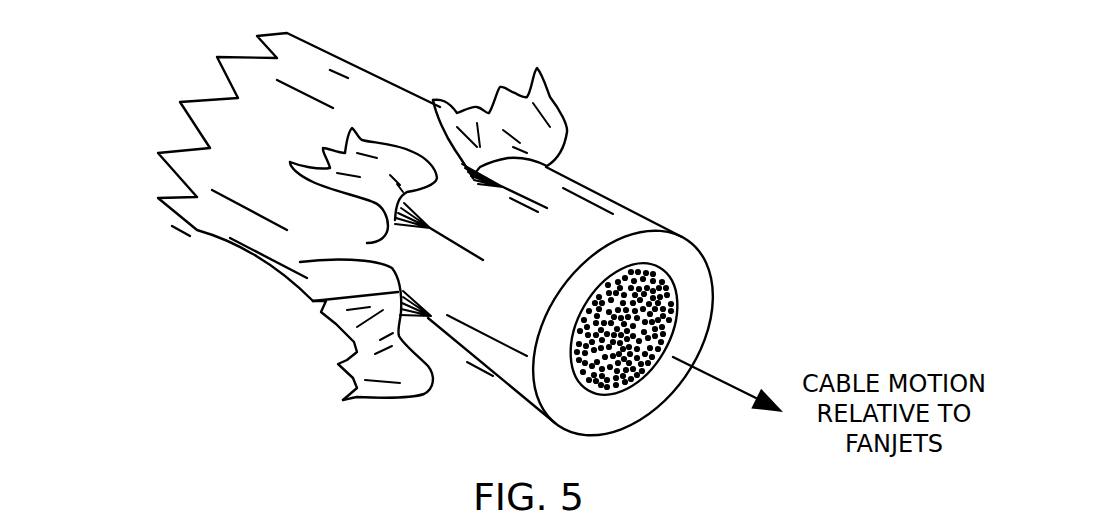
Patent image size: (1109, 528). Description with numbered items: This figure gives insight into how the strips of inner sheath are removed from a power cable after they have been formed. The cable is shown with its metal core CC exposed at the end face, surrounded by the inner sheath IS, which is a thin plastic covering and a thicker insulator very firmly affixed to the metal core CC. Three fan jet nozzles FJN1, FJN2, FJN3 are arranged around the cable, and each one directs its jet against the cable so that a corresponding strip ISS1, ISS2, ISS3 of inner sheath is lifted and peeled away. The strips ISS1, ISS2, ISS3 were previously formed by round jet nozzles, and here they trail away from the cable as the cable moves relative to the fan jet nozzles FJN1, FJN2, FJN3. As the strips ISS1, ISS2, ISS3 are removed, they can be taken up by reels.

The inner sheath IS is at (392, 90).
The strip of inner sheath ISS1 is at (347, 393).
The strip of inner sheath ISS2 is at (313, 163).
The strip of inner sheath ISS3 is at (543, 107).
The fan jet nozzle FJN1 is at (447, 330).
The fan jet nozzle FJN2 is at (437, 240).
The fan jet nozzle FJN3 is at (533, 189).
The metal core CC is at (680, 278).